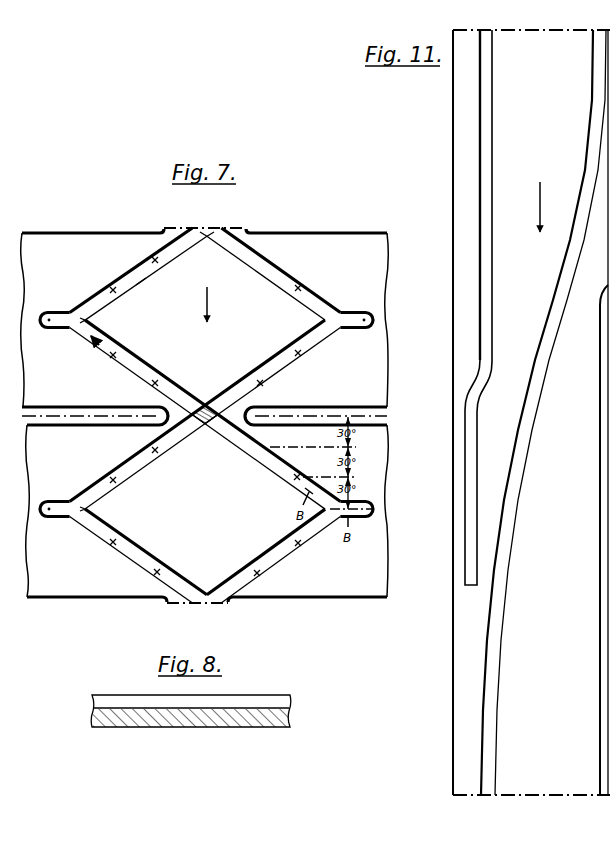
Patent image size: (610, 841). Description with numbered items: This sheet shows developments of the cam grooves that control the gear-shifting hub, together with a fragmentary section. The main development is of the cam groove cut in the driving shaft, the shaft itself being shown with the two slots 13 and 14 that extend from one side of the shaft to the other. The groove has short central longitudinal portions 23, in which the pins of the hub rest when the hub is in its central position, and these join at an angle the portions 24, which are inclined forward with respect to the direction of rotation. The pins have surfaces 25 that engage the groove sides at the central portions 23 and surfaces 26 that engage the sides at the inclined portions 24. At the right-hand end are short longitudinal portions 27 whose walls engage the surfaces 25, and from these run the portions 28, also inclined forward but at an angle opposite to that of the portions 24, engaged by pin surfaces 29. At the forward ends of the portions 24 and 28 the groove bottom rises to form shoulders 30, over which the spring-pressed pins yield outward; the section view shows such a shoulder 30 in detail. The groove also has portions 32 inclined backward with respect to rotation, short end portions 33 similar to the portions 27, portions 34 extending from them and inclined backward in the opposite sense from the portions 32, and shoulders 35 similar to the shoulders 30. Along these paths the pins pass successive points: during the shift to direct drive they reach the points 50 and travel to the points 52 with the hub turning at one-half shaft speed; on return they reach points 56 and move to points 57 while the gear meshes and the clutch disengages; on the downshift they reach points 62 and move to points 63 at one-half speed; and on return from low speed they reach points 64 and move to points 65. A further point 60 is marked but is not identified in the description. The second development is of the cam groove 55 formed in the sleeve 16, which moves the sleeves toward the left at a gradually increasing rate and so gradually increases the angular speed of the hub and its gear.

In FIG. 7, the slot 13 is at (85, 426).
In FIG. 7, the slot 14 is at (328, 407).
In FIG. 11, the sleeve 16 is at (453, 178).
In FIG. 7, the short central longitudinal portions 23 is at (216, 234).
In FIG. 7, the forwardly inclined cam portions 24 is at (285, 274).
In FIG. 7, the pin surfaces 25 is at (204, 404).
In FIG. 7, the pin surfaces 26 is at (215, 405).
In FIG. 7, the short longitudinal end portions 27 is at (360, 312).
In FIG. 7, the forwardly inclined cam portions 28 is at (296, 361).
In FIG. 7, the pin surfaces 29 is at (193, 408).
In FIG. 7, the shoulders 30 is at (247, 382).
In FIG. 8, the shoulders 30 is at (215, 709).
In FIG. 7, the backwardly inclined cam portions 32 is at (163, 376).
In FIG. 7, the short end portions 33 is at (53, 312).
In FIG. 7, the backwardly inclined cam portions 34 is at (128, 291).
In FIG. 7, the shoulders 35 is at (203, 237).
In FIG. 7, the cam points 50 is at (257, 262).
In FIG. 7, the cam points 52 is at (298, 290).
In FIG. 11, the cam groove 55 is at (492, 122).
In FIG. 7, the cam points 56 is at (301, 353).
In FIG. 7, the cam points 57 is at (262, 383).
In FIG. 7, the strip edge 60 is at (141, 281).
In FIG. 7, the cam points 62 is at (155, 383).
In FIG. 7, the cam points 63 is at (113, 355).
In FIG. 7, the cam points 64 is at (113, 290).
In FIG. 7, the cam points 65 is at (155, 260).